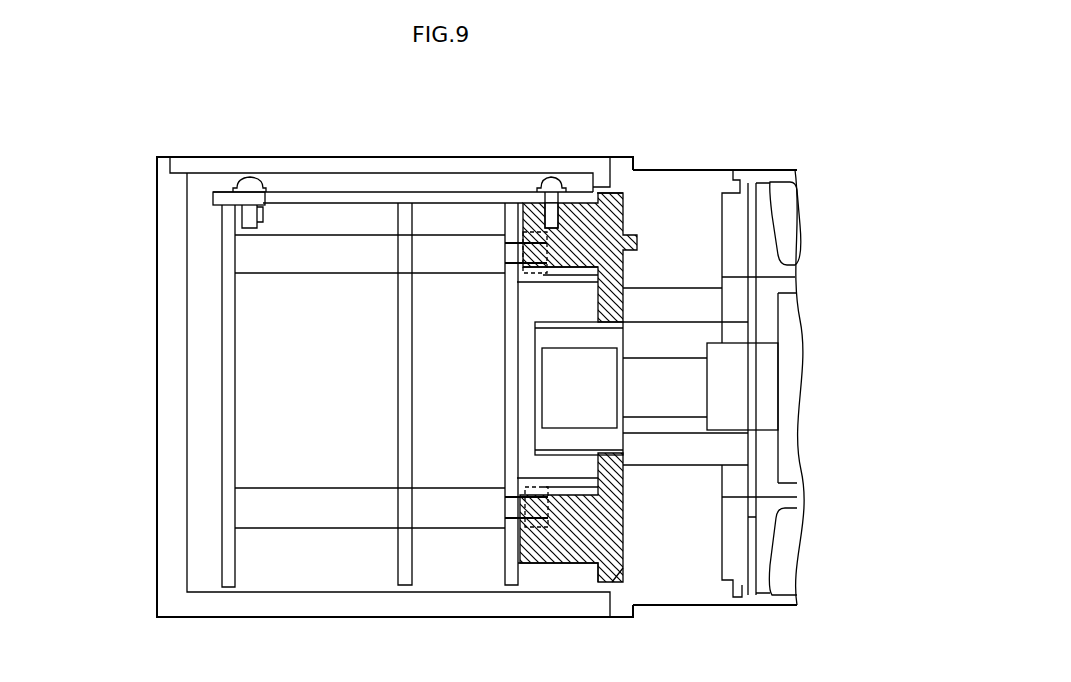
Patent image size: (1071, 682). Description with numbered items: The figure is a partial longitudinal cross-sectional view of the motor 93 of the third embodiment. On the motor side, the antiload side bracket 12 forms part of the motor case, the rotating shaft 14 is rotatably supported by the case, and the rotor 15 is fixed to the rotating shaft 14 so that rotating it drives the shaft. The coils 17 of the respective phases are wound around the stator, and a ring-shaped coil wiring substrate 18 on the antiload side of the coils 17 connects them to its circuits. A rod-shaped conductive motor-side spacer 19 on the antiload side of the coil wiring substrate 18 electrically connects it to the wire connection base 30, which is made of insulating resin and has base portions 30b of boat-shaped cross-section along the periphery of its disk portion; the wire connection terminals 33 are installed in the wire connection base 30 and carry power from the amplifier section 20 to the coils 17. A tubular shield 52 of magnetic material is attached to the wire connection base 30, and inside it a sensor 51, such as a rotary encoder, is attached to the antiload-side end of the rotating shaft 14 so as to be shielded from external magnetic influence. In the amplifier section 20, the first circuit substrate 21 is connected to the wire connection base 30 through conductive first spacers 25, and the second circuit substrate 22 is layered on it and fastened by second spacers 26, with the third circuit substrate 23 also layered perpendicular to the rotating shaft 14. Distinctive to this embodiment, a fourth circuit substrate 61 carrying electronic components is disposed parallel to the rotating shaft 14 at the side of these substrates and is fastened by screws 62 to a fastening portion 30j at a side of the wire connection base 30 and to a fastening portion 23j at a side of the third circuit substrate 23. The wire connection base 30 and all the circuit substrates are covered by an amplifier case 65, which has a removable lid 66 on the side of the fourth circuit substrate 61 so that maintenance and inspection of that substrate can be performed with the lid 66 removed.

The motor 93 is at (764, 130).
The amplifier section 20 is at (157, 207).
The amplifier case 65 is at (160, 298).
The third circuit substrate 23 is at (222, 355).
The fastening portion 23j is at (268, 205).
The removable lid 66 is at (235, 165).
The fourth circuit substrate 61 is at (300, 192).
The second spacers 26 is at (370, 238).
The first spacers 25 is at (437, 238).
The second circuit substrate 22 is at (400, 358).
The first circuit substrate 21 is at (512, 578).
The wire connection base 30 is at (582, 270).
The base portions 30b is at (570, 545).
The fastening portion 30j is at (517, 238).
The wire connection terminals 33 is at (600, 240).
The screws 62 is at (555, 190).
The tubular shield 52 is at (540, 332).
The sensor 51 is at (550, 395).
The antiload side bracket 12 is at (686, 185).
The rotating shaft 14 is at (687, 403).
The rotor 15 is at (790, 363).
The motor-side spacer 19 is at (735, 303).
The coil wiring substrate 18 is at (750, 532).
The coils 17 is at (782, 573).